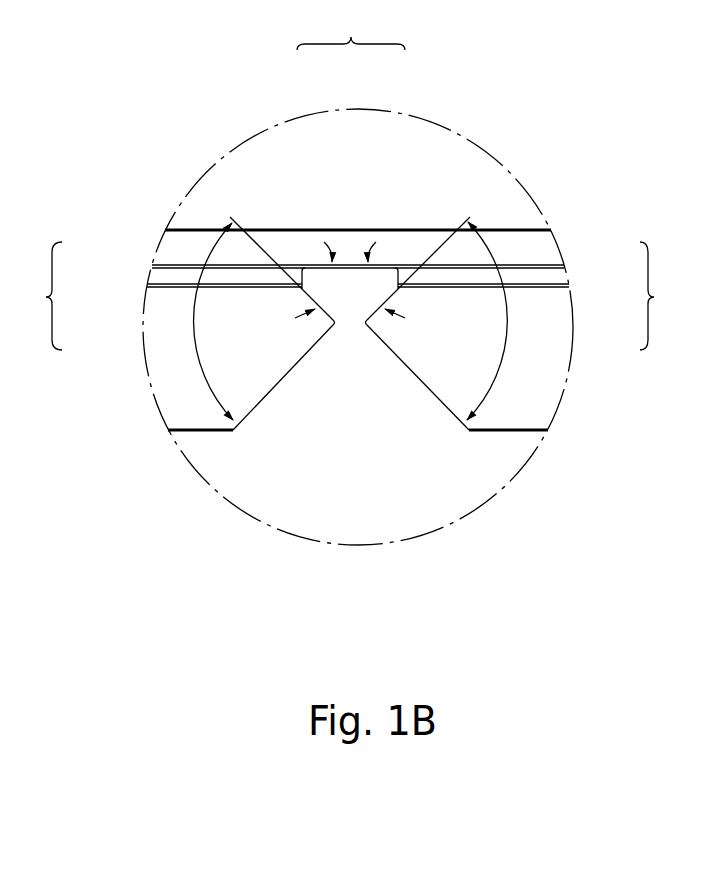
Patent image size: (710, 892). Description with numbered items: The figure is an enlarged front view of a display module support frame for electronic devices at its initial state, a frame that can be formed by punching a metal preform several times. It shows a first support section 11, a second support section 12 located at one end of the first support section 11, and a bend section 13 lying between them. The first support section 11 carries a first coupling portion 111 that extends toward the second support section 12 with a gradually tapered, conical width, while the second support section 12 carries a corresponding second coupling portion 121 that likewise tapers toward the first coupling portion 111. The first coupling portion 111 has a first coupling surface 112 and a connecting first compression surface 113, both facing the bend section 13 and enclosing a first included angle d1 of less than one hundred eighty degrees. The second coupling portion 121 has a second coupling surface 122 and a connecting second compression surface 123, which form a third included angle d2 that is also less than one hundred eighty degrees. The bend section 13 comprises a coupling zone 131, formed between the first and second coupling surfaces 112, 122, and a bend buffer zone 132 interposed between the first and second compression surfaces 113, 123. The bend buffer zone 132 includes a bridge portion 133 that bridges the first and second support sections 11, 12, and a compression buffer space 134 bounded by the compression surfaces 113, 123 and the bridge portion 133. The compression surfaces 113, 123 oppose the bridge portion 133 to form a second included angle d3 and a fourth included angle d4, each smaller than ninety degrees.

The first support section 11 is at (531, 402).
The second support section 12 is at (203, 410).
The bend section 13 is at (285, 232).
The first coupling portion 111 is at (666, 296).
The first coupling surface 112 is at (452, 405).
The first compression surface 113 is at (368, 259).
The second coupling portion 121 is at (37, 296).
The second coupling surface 122 is at (256, 405).
The second compression surface 123 is at (332, 259).
The coupling zone 131 is at (397, 422).
The bend buffer zone 132 is at (351, 31).
The bridge portion 133 is at (358, 287).
The compression buffer space 134 is at (346, 287).
The first included angle d1 is at (451, 321).
The third included angle d2 is at (250, 321).
The second included angle d3 is at (403, 250).
The fourth included angle d4 is at (297, 250).